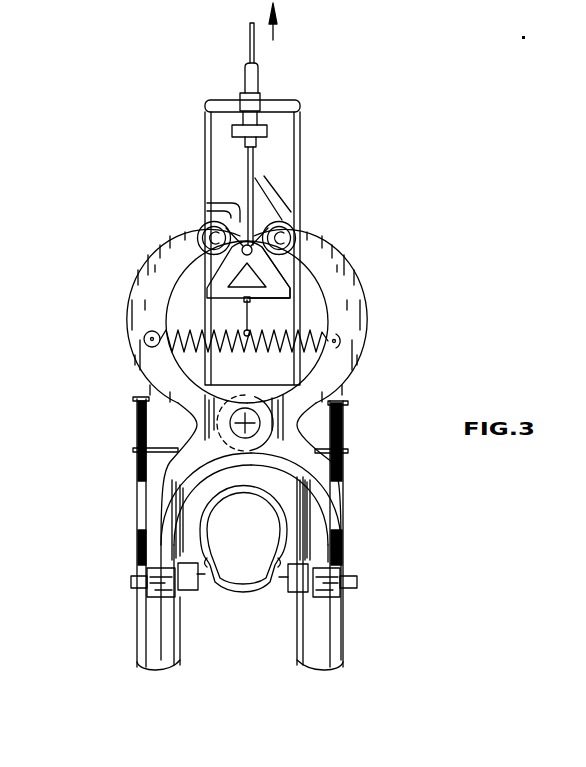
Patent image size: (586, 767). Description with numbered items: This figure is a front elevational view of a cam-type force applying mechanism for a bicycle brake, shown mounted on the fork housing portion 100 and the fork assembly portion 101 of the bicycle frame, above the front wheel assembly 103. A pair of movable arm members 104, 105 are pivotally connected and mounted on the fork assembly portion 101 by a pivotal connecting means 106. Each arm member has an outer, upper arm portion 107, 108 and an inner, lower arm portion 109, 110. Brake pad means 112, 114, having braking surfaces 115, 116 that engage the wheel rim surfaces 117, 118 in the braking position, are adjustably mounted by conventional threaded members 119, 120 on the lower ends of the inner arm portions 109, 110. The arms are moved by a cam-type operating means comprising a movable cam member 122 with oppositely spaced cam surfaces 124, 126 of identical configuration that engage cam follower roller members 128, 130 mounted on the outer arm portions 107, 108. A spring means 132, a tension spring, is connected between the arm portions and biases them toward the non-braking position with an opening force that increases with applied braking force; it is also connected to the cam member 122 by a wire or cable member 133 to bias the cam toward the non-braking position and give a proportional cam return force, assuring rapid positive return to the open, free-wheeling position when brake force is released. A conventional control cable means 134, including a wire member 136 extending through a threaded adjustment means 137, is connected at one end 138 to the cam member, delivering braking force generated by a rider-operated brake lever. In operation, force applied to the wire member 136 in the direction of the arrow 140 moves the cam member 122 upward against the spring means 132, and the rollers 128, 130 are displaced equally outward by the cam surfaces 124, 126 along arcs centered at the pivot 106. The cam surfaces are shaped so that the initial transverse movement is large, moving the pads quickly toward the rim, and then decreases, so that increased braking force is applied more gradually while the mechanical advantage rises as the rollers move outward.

The fork housing portion 100 is at (300, 140).
The fork assembly portion 101 is at (347, 420).
The front wheel assembly 103 is at (243, 602).
The movable arm member 104 is at (188, 427).
The movable arm member 105 is at (302, 428).
The pivotal connecting means 106 is at (240, 433).
The outer arm portion 107 is at (135, 294).
The outer arm portion 108 is at (365, 307).
The inner arm portion 109 is at (160, 522).
The inner arm portion 110 is at (338, 533).
The brake pad means 112 is at (172, 600).
The brake pad means 114 is at (315, 600).
The braking surface 115 is at (212, 566).
The braking surface 116 is at (277, 576).
The wheel rim surface 117 is at (206, 590).
The wheel rim surface 118 is at (278, 593).
The threaded member 119 is at (131, 582).
The threaded member 120 is at (357, 583).
The cam member 122 is at (207, 203).
The cam surface 124 is at (213, 275).
The cam surface 126 is at (305, 272).
The cam follower roller member 128 is at (200, 225).
The cam follower roller member 130 is at (300, 225).
The spring means 132 is at (168, 366).
The wire or cable member 133 is at (243, 313).
The control cable means 134 is at (264, 88).
The wire member 136 is at (250, 48).
The threaded adjustment means 137 is at (232, 128).
The end of wire member 138 is at (283, 190).
The arrow 140 is at (276, 38).